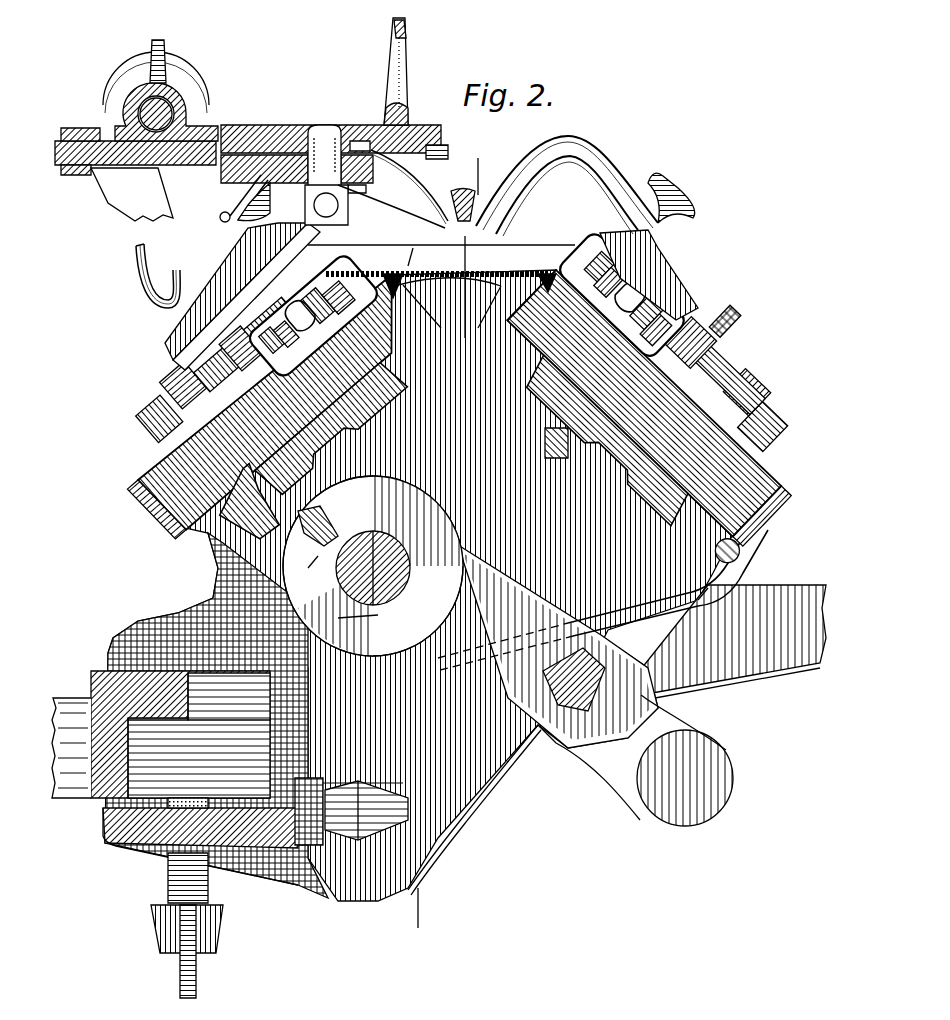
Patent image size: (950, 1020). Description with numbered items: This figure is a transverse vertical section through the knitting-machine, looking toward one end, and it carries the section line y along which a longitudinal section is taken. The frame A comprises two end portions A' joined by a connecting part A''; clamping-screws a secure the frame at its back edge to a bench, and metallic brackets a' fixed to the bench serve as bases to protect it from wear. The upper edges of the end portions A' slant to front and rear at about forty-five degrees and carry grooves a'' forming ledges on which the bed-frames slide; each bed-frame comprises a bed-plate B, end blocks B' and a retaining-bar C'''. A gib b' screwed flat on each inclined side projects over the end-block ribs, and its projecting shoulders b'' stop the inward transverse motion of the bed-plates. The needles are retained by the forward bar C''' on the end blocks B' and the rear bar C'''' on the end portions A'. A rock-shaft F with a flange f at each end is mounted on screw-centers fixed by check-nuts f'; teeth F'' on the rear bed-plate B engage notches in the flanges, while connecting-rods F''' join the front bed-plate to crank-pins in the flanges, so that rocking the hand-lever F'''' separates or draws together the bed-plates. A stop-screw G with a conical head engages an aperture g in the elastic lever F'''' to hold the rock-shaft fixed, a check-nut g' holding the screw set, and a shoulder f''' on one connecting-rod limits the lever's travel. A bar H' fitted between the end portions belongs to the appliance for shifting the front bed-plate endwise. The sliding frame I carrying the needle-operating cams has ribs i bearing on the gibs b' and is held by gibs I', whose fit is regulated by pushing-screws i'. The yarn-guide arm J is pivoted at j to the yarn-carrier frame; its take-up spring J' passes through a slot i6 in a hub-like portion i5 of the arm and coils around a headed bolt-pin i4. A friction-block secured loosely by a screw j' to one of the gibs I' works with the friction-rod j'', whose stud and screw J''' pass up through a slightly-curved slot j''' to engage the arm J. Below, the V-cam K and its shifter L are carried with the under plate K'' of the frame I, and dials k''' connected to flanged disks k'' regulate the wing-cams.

The frame A is at (617, 720).
The end portions A' is at (420, 585).
The connecting part A'' is at (219, 715).
The bed-plate B is at (451, 451).
The end blocks B' is at (459, 401).
The forward bar C''' is at (467, 304).
The rear bar C'''' is at (460, 507).
The rock-shaft F is at (373, 566).
The teeth F'' is at (314, 541).
The connecting-rods F''' is at (668, 578).
The hand-lever F'''' is at (505, 647).
The stop-screw G is at (360, 805).
The bar H' is at (562, 466).
The sliding frame I is at (431, 296).
The gibs I' is at (441, 249).
The yarn-guide arm J is at (251, 173).
The take-up spring J' is at (185, 106).
The screw J''' is at (333, 159).
The V-cam K is at (457, 423).
The under plate K'' is at (461, 356).
The shifter L is at (160, 390).
The clamping-screws a is at (200, 898).
The metallic brackets a' is at (161, 734).
The grooves a'' is at (449, 307).
The gib b' is at (391, 273).
The projecting shoulders b'' is at (545, 270).
The flange f is at (373, 560).
The check-nuts f' is at (354, 627).
The shoulder f''' is at (658, 589).
The aperture g is at (574, 679).
The check-nut g' is at (309, 796).
The longitudinal ribs i is at (449, 261).
The pushing-screws i' is at (464, 259).
The headed bolt-pin i4 is at (112, 78).
The hub-like portion i5 is at (183, 97).
The slot i6 is at (141, 61).
The pivot j is at (165, 276).
The screw j' is at (167, 159).
The friction-rod j'' is at (352, 207).
The slightly-curved slot j''' is at (356, 160).
The flanged disk k'' is at (412, 308).
The dial k''' is at (734, 302).
The section line y is at (408, 482).